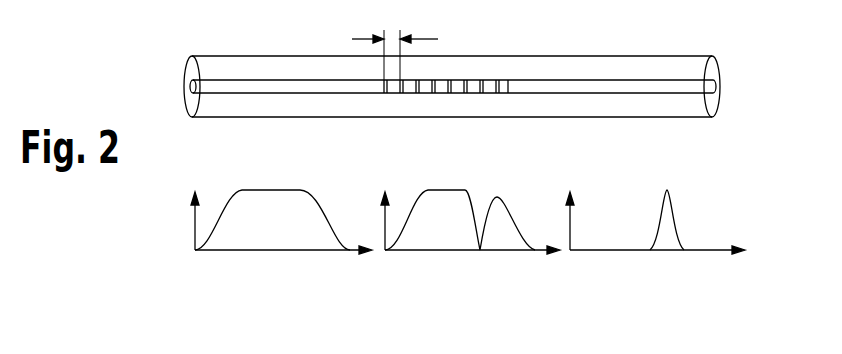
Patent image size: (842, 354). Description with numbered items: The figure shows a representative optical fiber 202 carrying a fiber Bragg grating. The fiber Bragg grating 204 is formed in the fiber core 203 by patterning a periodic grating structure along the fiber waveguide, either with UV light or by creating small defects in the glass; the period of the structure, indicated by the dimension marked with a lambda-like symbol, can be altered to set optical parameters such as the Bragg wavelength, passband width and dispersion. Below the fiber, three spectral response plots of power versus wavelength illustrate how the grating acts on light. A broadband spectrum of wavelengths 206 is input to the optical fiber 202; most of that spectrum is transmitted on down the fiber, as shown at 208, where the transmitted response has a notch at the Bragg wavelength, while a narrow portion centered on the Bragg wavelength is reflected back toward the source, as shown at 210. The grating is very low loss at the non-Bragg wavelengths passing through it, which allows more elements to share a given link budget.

The optical fiber 202 is at (721, 71).
The fiber core 203 is at (716, 88).
The fiber Bragg grating 204 is at (470, 80).
The broadband spectrum of wavelengths 206 is at (259, 296).
The transmitted spectrum 208 is at (468, 298).
The reflected spectrum 210 is at (667, 298).